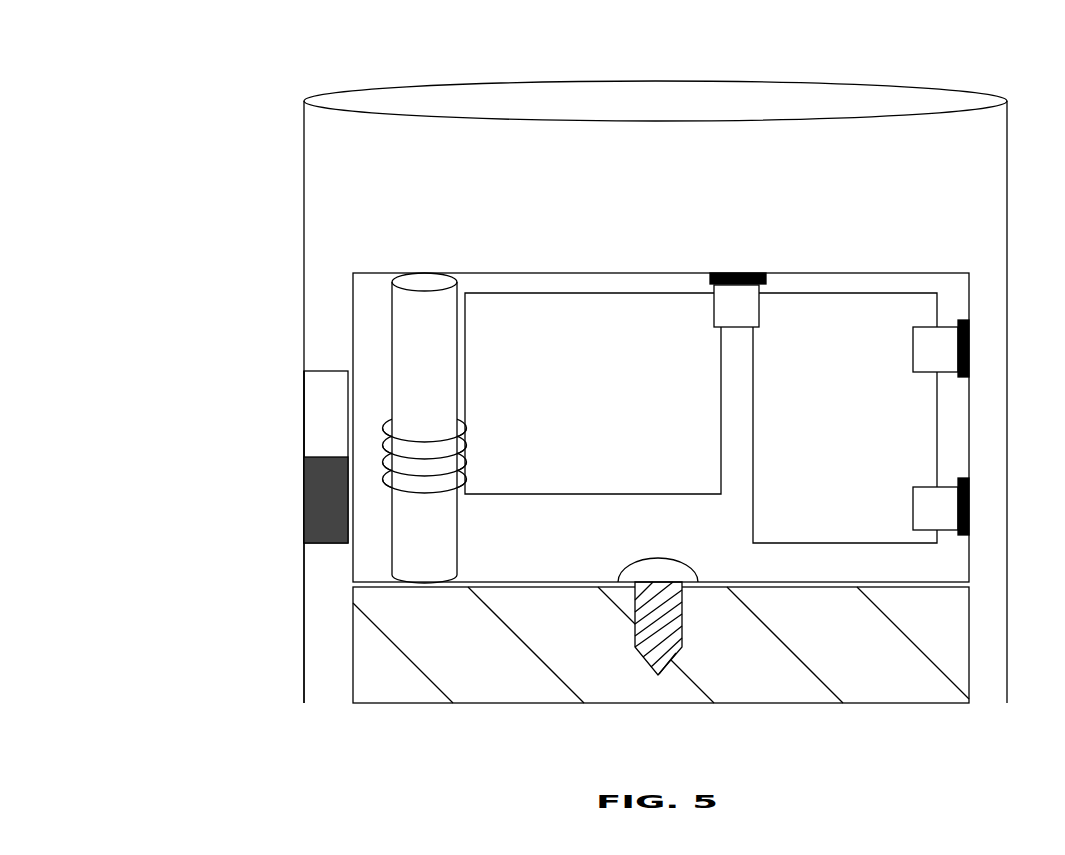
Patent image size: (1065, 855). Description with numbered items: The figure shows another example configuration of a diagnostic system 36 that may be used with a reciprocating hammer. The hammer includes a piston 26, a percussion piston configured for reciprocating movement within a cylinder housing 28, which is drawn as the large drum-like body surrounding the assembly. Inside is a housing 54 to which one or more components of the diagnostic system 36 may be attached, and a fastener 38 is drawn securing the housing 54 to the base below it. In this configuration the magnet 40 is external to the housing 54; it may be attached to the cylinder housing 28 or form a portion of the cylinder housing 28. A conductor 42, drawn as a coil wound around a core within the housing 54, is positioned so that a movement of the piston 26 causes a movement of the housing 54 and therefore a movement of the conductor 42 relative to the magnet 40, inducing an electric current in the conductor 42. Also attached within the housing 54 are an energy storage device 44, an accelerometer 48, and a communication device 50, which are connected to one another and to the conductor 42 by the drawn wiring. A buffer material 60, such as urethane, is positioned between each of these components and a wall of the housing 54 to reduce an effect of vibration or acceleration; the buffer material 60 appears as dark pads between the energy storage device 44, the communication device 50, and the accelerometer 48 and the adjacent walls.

The diagnostic system 36 is at (153, 76).
The piston 26 is at (351, 663).
The cylinder housing 28 is at (300, 577).
The fastener 38 is at (632, 640).
The magnet 40 is at (310, 441).
The conductor 42 is at (385, 412).
The energy storage device 44 is at (750, 316).
The accelerometer 48 is at (949, 519).
The communication device 50 is at (949, 360).
The housing 54 is at (485, 271).
The buffer material 60 is at (750, 271).